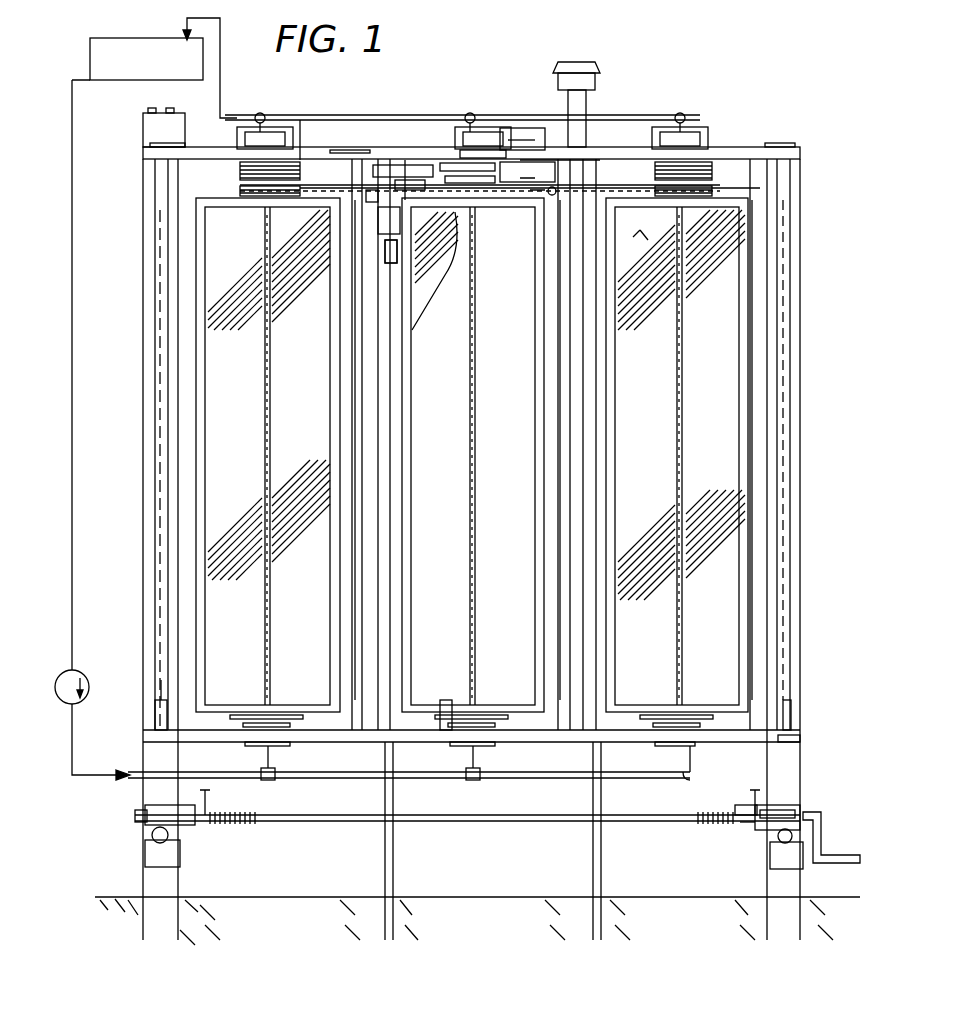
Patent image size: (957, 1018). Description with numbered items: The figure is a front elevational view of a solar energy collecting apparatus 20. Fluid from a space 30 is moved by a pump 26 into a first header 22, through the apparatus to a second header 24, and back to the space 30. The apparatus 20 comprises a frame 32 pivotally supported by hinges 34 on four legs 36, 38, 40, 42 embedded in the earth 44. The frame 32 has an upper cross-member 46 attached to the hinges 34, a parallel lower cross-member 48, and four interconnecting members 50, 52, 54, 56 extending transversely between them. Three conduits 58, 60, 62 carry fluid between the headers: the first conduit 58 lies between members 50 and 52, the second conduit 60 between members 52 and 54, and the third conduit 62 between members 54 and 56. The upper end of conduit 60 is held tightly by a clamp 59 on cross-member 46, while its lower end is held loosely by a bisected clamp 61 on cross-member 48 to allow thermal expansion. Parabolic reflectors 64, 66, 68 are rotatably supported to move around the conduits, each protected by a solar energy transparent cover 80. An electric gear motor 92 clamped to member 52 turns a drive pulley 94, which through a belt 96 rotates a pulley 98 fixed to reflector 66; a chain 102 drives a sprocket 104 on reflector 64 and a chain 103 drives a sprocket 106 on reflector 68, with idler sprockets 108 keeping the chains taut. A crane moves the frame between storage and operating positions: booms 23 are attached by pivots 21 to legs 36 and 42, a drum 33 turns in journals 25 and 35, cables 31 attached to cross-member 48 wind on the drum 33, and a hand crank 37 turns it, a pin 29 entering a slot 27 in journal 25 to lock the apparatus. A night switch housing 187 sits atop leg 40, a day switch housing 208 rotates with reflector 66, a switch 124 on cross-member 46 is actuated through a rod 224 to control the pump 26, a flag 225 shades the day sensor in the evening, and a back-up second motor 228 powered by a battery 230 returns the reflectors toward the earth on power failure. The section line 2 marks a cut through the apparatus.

The section line 2- 2 is at (150, 97).
The solar energy collecting apparatus 20 is at (695, 93).
The pivot 21 is at (160, 855).
The first header 22 is at (312, 785).
The boom 23 is at (150, 805).
The second header 24 is at (348, 110).
The journal 25 is at (778, 840).
The pump 26 is at (90, 677).
The slot 27 is at (765, 805).
The pin 29 is at (746, 825).
The space 30 is at (152, 68).
The cable 31 is at (210, 793).
The frame 32 is at (728, 140).
The drum 33 is at (335, 825).
The hinge 34 is at (195, 143).
The journal 35 is at (152, 838).
The leg 36 is at (150, 740).
The hand crank 37 is at (832, 855).
The leg 38 is at (390, 845).
The leg 40 is at (590, 850).
The leg 42 is at (800, 760).
The earth 44 is at (210, 897).
The upper cross-member 46 is at (760, 145).
The lower cross-member 48 is at (446, 700).
The interconnecting member 50 is at (160, 528).
The interconnecting member 52 is at (368, 582).
The interconnecting member 54 is at (572, 577).
The interconnecting member 56 is at (780, 603).
The first conduit 58 is at (275, 460).
The clamp 59 is at (265, 115).
The second conduit 60 is at (478, 437).
The clamp 61 is at (282, 750).
The third conduit 62 is at (683, 390).
The parabolic reflector 64 is at (245, 449).
The parabolic reflector 66 is at (456, 449).
The parabolic reflector 68 is at (658, 449).
The solar energy transparent cover 80 is at (215, 363).
The electric gear motor 92 is at (380, 213).
The drive pulley 94 is at (375, 180).
The belt 96 is at (400, 214).
The pulley 98 is at (495, 190).
The chain 102 is at (295, 118).
The chain 103 is at (636, 195).
The sprocket 104 is at (237, 195).
The sprocket 106 is at (714, 180).
The idler sprocket 108 is at (335, 215).
The switch 124 is at (445, 150).
The night switch housing 187 is at (560, 70).
The day switch housing 208 is at (500, 158).
The rod 224 is at (503, 150).
The flag 225 is at (410, 160).
The second motor 228 is at (400, 250).
The battery 230 is at (150, 135).